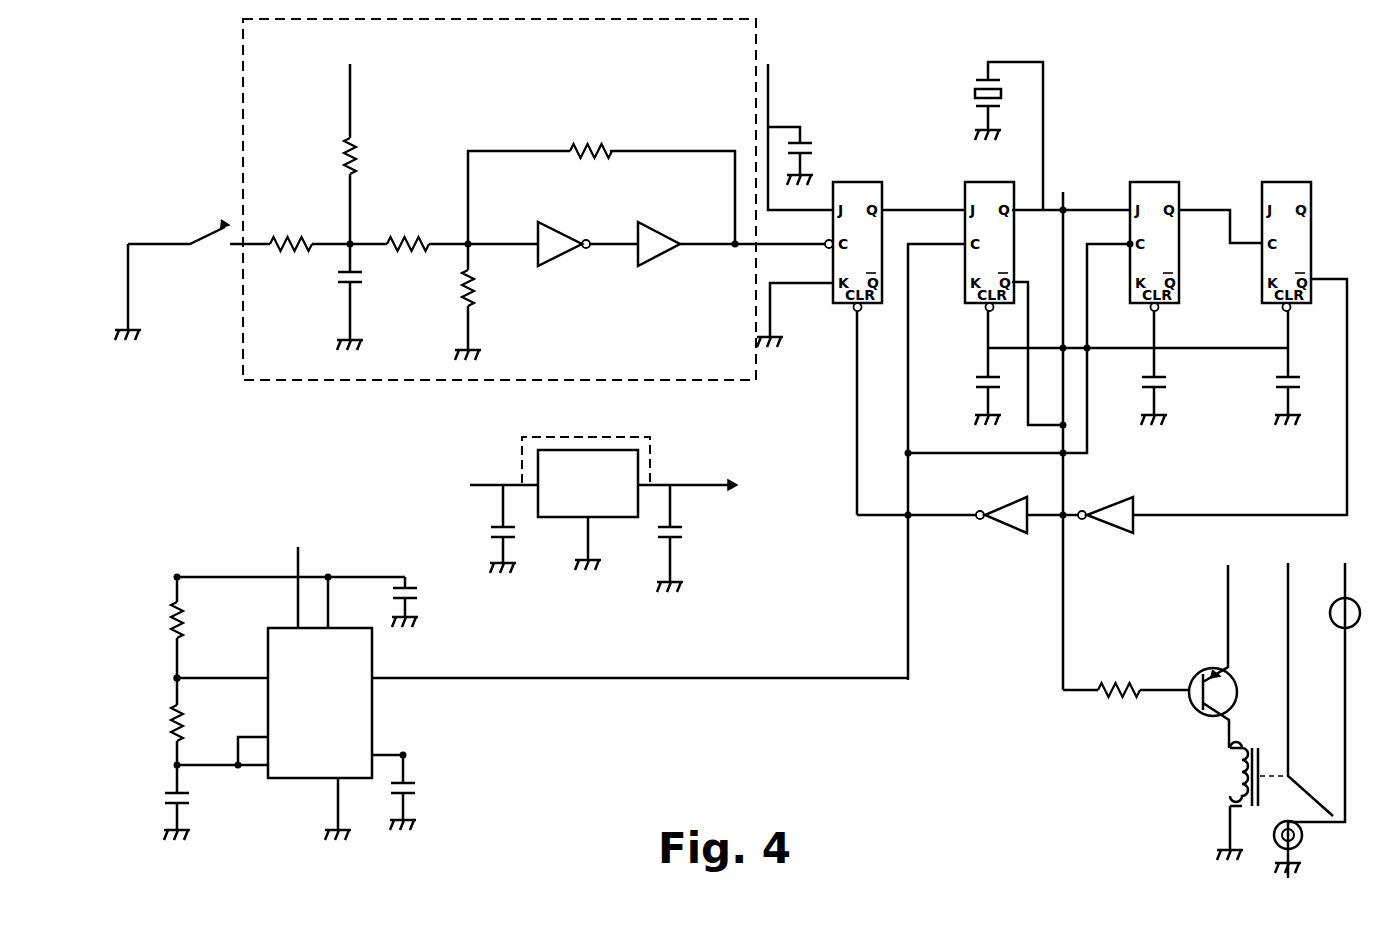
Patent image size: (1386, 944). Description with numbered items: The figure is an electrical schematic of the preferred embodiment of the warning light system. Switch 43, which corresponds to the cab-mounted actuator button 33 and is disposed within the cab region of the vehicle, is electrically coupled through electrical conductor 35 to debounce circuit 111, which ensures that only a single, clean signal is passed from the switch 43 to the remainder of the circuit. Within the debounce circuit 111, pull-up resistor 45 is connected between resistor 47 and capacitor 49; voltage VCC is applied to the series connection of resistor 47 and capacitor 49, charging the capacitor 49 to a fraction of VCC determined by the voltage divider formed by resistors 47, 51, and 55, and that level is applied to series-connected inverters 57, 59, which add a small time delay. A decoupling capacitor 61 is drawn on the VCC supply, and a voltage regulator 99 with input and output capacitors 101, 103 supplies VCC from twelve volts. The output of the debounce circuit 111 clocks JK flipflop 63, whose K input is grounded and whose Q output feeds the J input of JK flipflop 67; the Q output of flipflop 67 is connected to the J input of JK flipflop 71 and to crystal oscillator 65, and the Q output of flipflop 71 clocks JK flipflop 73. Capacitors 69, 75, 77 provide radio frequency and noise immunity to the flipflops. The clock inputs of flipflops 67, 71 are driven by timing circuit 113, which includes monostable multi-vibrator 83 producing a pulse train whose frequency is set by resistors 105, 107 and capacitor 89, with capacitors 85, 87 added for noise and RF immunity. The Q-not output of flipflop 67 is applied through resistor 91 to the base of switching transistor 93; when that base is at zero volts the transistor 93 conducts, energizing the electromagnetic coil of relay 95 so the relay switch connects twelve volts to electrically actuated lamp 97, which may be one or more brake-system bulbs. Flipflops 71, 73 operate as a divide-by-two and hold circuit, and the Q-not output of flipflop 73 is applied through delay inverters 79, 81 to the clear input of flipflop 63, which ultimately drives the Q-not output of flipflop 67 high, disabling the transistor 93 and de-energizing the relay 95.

The actuator button 33 is at (588, 140).
The electrical conductor 35 is at (242, 253).
The switch 43 is at (210, 230).
The pull-up resistor 45 is at (283, 232).
The resistor 47 is at (366, 150).
The capacitor 49 is at (372, 282).
The resistor 51 is at (415, 232).
The resistor 55 is at (488, 290).
The inverter 57 is at (576, 259).
The inverter 59 is at (665, 258).
The capacitor 61 is at (814, 135).
The JK flipflop 63 is at (864, 181).
The crystal oscillator 65 is at (993, 72).
The JK flipflop 67 is at (993, 182).
The capacitor 69 is at (968, 377).
The JK flipflop 71 is at (1155, 180).
The JK flipflop 73 is at (1278, 180).
The capacitor 75 is at (1177, 385).
The capacitor 77 is at (1268, 384).
The inverter 79 is at (1000, 525).
The inverter 81 is at (1105, 530).
The monostable multi-vibrator 83 is at (385, 700).
The capacitor 85 is at (428, 597).
The capacitor 87 is at (426, 783).
The capacitor 89 is at (158, 799).
The resistor 91 is at (1115, 704).
The switching transistor 93 is at (1190, 715).
The relay 95 is at (1225, 776).
The electrically actuated lamp 97 is at (1303, 840).
The voltage regulator 99 is at (601, 447).
The capacitor 101 is at (477, 534).
The capacitor 103 is at (688, 533).
The resistor 105 is at (175, 618).
The resistor 107 is at (164, 720).
The debounce circuit 111 is at (343, 382).
The timing circuit 113 is at (162, 662).